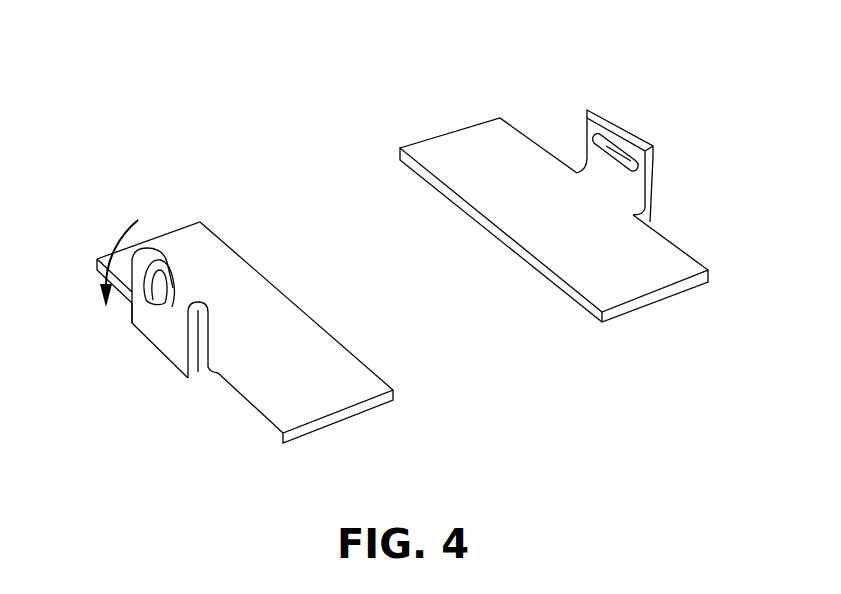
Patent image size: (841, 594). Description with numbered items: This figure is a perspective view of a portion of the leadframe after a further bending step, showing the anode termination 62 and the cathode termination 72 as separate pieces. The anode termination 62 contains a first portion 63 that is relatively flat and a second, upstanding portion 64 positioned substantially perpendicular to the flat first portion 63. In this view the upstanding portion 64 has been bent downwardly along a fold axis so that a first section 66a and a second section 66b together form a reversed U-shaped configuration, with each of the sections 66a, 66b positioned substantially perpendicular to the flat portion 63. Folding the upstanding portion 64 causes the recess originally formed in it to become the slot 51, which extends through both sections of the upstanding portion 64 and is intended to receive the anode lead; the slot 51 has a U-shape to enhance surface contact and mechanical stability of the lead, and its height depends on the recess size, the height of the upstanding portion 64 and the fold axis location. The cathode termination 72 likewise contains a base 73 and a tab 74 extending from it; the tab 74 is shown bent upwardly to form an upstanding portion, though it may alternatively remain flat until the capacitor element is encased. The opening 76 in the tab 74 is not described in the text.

The anode termination 62 is at (76, 210).
The first portion 63 is at (357, 387).
The upstanding portion 64 is at (176, 268).
The slot 51 is at (157, 298).
The first section 66a is at (164, 337).
The second section 66b is at (208, 337).
The cathode termination 72 is at (456, 110).
The base 73 is at (672, 275).
The tab 74 is at (634, 138).
The slot 76 is at (615, 157).